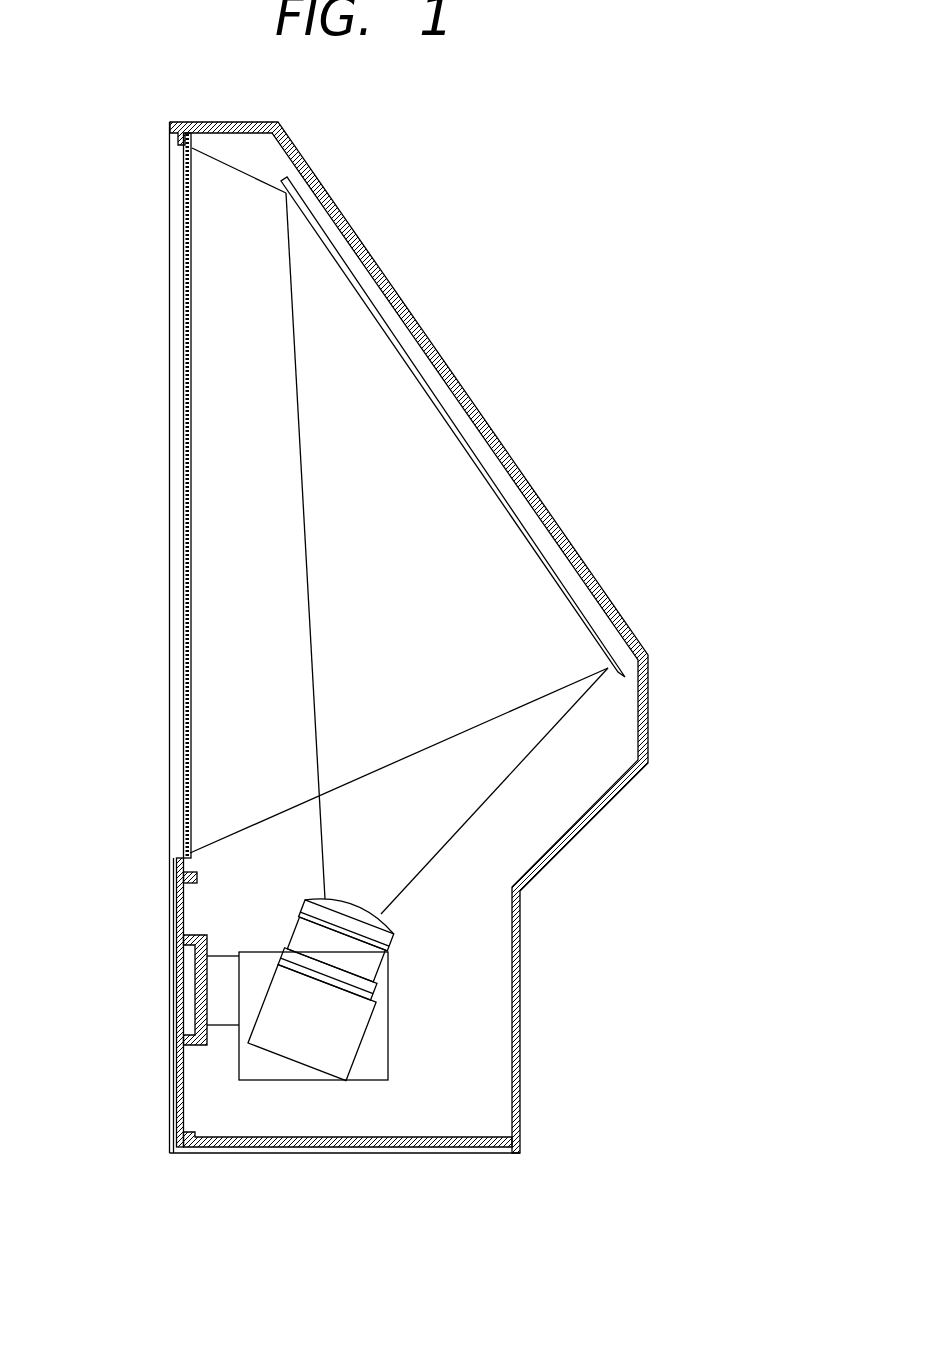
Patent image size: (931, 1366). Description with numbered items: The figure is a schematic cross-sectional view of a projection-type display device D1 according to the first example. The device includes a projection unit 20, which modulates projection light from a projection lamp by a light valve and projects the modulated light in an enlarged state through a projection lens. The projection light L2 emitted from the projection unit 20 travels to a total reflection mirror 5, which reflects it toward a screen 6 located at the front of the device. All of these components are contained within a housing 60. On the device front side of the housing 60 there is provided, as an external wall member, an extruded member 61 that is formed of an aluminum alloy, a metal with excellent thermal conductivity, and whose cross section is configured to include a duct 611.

The total reflection mirror 5 is at (483, 467).
The screen 6 is at (183, 519).
The projection unit 20 is at (404, 1016).
The housing 60 is at (420, 1153).
The extruded member 61 is at (178, 1073).
The duct 611 is at (188, 973).
The projection light L2 is at (497, 790).
The projection-type display device D1 is at (240, 1203).